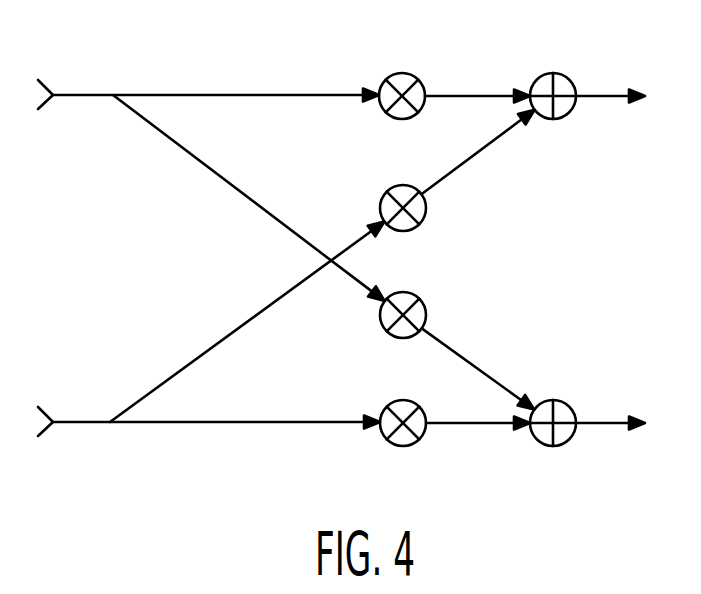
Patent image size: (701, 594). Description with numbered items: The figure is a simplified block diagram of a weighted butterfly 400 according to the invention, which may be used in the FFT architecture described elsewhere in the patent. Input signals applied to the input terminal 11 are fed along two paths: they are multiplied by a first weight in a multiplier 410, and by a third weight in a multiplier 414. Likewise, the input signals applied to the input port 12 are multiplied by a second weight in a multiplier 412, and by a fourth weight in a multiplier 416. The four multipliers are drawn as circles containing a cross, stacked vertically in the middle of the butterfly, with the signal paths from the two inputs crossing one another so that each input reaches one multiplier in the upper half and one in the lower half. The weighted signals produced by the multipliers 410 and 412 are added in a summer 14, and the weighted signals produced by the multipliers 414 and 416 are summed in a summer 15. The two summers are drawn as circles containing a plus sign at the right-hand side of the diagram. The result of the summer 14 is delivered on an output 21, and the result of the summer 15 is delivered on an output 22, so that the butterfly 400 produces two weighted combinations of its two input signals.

The input terminal 11 is at (40, 78).
The input port 12 is at (40, 406).
The summer 14 is at (566, 75).
The summer 15 is at (566, 402).
The first output 21 is at (637, 93).
The second output 22 is at (637, 420).
The combiner network 400 is at (511, 279).
The multiplier 410 is at (386, 113).
The multiplier 412 is at (383, 197).
The multiplier 414 is at (383, 326).
The multiplier 416 is at (389, 405).